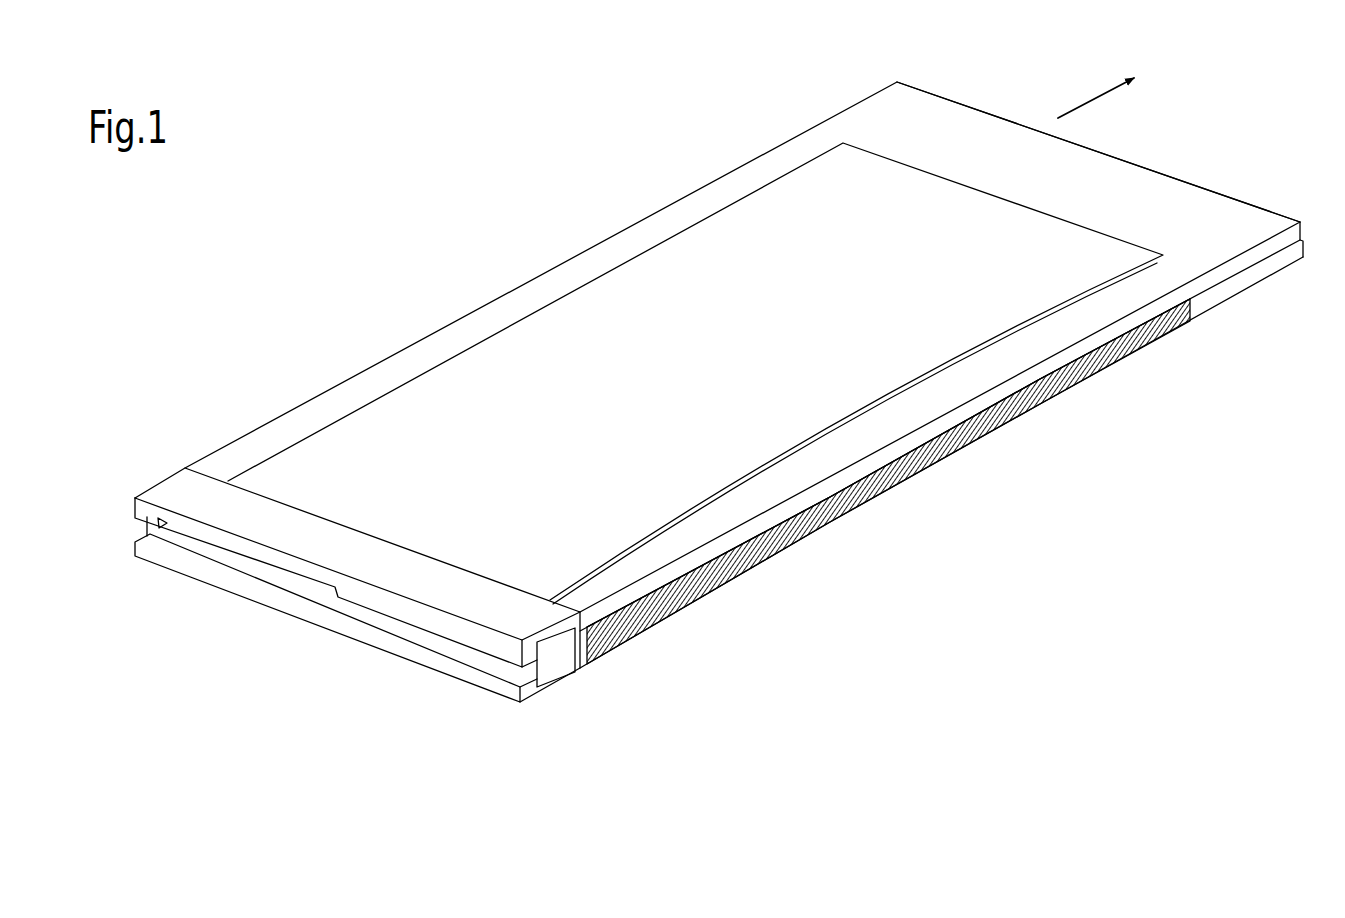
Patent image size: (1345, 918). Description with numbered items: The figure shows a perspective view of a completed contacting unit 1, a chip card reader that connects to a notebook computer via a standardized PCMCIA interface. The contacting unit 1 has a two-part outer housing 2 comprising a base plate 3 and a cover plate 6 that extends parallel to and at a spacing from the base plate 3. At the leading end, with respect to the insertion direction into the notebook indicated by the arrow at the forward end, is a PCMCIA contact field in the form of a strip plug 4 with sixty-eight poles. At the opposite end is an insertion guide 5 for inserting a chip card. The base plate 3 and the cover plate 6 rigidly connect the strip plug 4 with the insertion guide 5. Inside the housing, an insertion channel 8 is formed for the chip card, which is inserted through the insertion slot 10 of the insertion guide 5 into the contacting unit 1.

The contacting unit 1 is at (715, 416).
The outer housing 2 is at (270, 420).
The base plate 3 is at (740, 570).
The strip plug 4 is at (1139, 162).
The insertion guide 5 is at (427, 611).
The cover plate 6 is at (552, 338).
The insertion channel 8 is at (1008, 420).
The insertion slot 10 is at (258, 575).